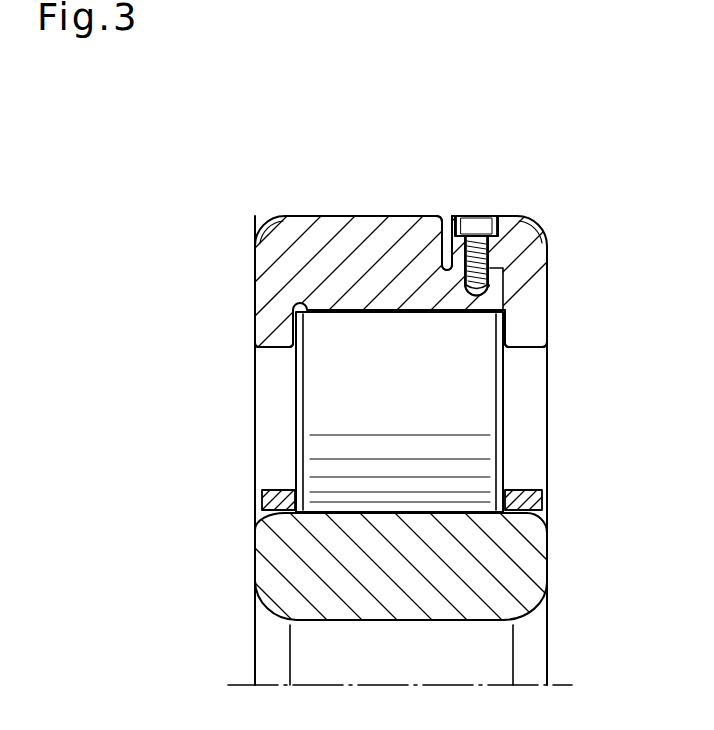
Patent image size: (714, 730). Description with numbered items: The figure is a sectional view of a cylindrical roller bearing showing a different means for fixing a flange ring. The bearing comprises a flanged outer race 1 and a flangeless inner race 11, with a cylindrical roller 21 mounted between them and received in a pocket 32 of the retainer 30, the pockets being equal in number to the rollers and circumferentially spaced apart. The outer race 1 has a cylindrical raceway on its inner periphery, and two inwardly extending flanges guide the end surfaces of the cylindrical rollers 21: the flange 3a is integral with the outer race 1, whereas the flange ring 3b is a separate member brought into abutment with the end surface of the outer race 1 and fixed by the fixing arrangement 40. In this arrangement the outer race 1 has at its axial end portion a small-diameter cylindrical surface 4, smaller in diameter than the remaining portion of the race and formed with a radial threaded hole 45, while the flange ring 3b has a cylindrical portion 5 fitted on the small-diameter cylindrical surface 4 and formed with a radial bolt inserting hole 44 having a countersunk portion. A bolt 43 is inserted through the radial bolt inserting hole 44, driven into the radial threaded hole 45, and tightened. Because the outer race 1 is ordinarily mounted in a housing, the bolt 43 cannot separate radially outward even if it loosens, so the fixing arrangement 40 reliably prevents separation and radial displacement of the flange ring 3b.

The outer race 1 is at (300, 222).
The flange 3a is at (262, 312).
The flange ring 3b is at (545, 313).
The cylindrical portion 5 is at (430, 226).
The fixing arrangement 40 is at (512, 259).
The small-diameter cylindrical surface 4 is at (512, 292).
The radial bolt inserting hole 44 is at (473, 247).
The radial threaded hole 45 is at (475, 284).
The bolt 43 is at (466, 242).
The cylindrical roller 21 is at (316, 401).
The cage 30 is at (454, 485).
The pocket 32 is at (502, 495).
The inner race 11 is at (265, 568).